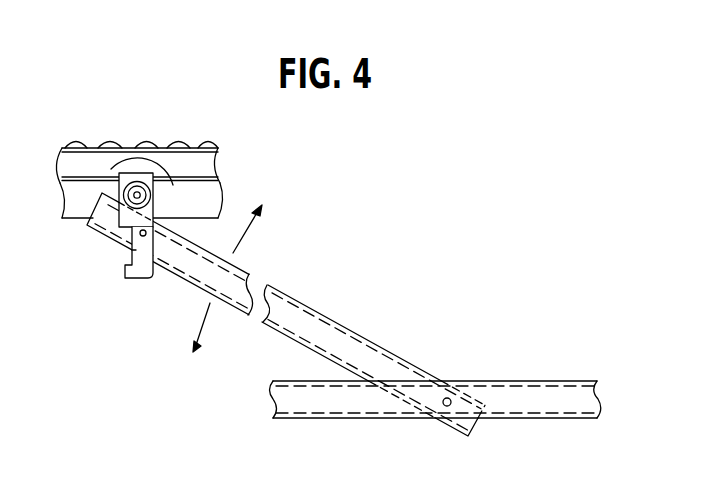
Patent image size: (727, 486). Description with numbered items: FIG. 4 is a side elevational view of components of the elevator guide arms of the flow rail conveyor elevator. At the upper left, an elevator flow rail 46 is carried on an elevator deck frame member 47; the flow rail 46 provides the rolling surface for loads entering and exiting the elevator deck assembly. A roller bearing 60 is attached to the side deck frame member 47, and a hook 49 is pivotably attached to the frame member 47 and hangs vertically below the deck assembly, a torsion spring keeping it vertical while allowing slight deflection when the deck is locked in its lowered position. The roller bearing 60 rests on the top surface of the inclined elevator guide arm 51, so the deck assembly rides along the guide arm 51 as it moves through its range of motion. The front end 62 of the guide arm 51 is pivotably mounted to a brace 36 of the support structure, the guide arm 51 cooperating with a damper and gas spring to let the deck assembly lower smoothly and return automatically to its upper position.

The support brace 36 is at (333, 410).
The elevator flow rail 46 is at (212, 162).
The elevator deck frame member 47 is at (213, 195).
The hook 49 is at (130, 280).
The elevator guide arm 51 is at (235, 267).
The roller bearing 60 is at (132, 179).
The front end of elevator guide arm 62 is at (447, 397).